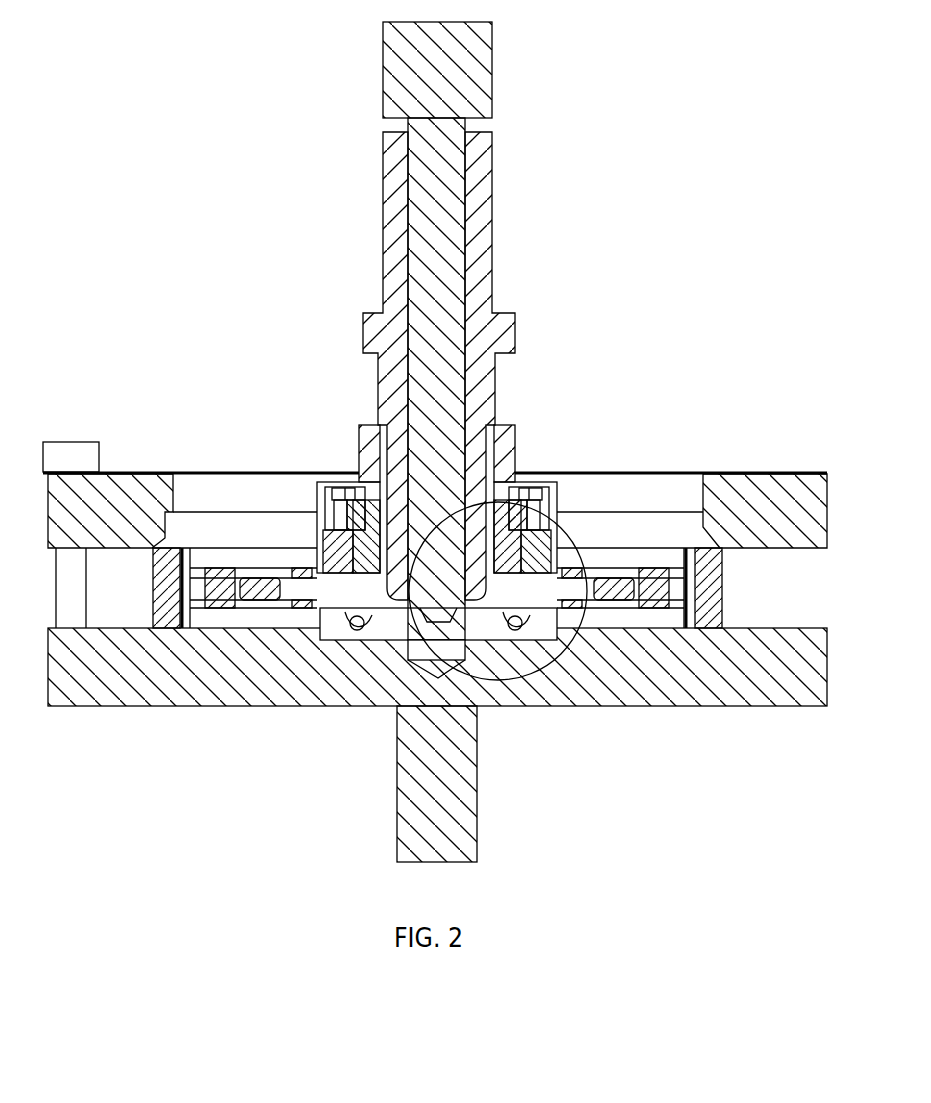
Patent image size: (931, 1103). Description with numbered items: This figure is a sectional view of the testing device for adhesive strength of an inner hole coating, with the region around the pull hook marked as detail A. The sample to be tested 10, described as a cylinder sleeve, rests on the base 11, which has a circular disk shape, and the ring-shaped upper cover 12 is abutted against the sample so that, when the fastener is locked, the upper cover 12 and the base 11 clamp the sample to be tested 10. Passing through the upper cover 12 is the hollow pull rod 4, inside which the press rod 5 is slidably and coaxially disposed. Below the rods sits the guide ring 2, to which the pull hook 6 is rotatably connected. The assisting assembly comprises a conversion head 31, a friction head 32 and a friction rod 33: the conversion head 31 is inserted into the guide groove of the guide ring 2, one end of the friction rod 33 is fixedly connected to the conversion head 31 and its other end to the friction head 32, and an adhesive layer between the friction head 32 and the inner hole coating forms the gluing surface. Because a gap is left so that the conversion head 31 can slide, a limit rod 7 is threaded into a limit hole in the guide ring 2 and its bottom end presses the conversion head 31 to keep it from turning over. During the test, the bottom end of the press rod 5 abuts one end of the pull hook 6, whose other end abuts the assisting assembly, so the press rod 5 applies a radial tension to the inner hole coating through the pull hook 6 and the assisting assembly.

The guide ring 2 is at (322, 535).
The pull rod 4 is at (388, 240).
The press rod 5 is at (392, 66).
The pull hook 6 is at (383, 622).
The limit rod 7 is at (534, 500).
The sample to be tested 10 is at (722, 590).
The base 11 is at (128, 697).
The upper cover 12 is at (136, 484).
The conversion head 31 is at (585, 612).
The friction head 32 is at (668, 608).
The friction rod 33 is at (612, 612).
The detail region A is at (575, 537).